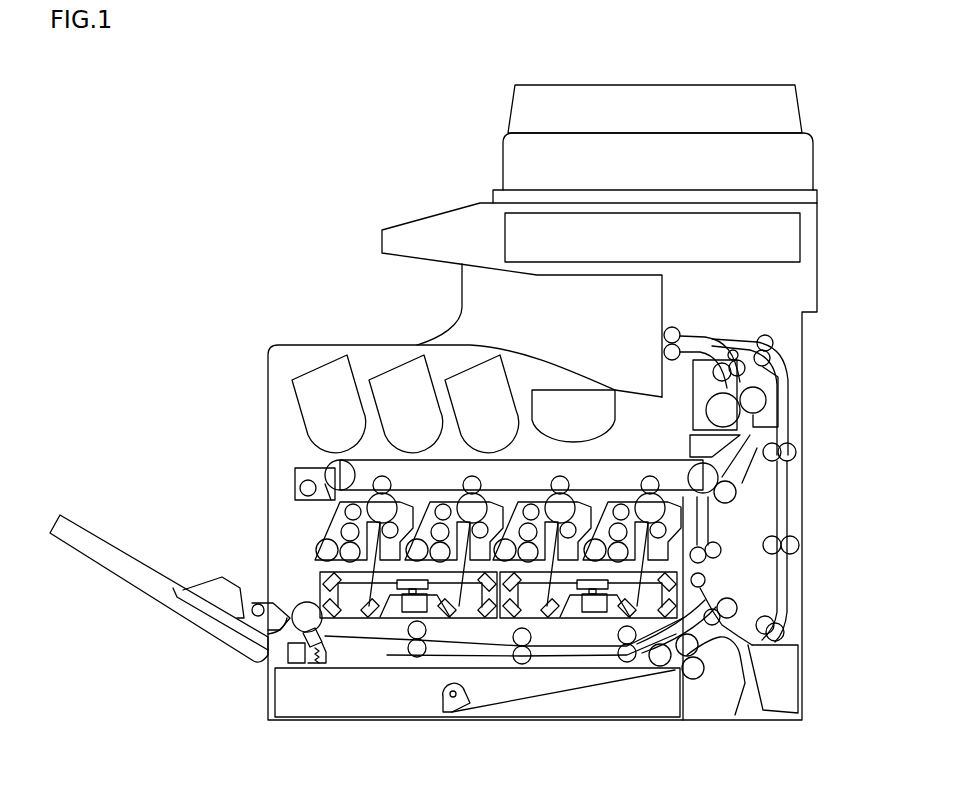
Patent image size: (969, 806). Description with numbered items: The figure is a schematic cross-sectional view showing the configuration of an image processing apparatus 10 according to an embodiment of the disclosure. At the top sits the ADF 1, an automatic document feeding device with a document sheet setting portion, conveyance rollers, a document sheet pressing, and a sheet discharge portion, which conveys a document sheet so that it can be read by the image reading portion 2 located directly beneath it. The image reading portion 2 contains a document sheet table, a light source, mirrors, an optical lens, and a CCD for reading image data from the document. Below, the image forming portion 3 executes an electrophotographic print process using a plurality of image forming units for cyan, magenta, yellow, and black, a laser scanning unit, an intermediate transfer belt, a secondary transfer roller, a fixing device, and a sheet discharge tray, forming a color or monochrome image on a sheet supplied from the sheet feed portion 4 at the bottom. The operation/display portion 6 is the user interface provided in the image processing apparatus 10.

The image processing apparatus 10 is at (264, 130).
The ADF 1 is at (810, 124).
The image reading portion 2 is at (810, 240).
The image forming portion 3 is at (287, 371).
The sheet feed portion 4 is at (272, 695).
The operation/display portion 6 is at (412, 213).